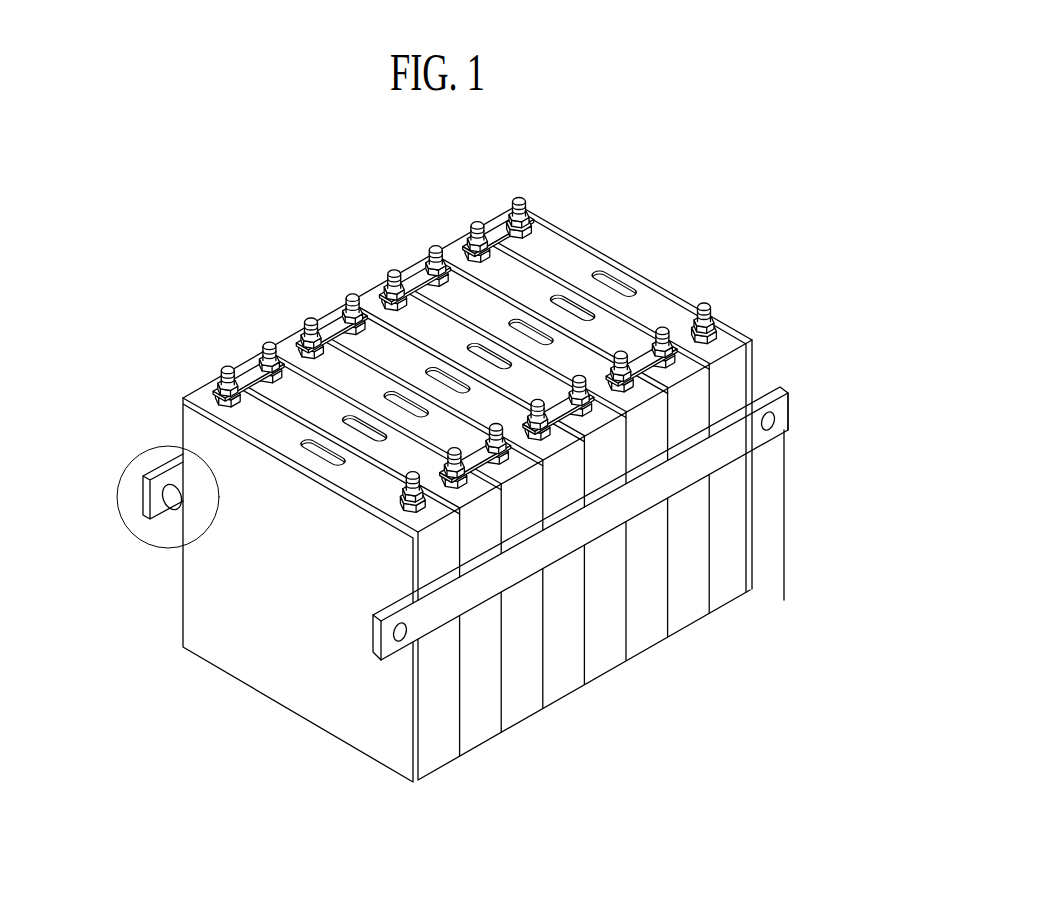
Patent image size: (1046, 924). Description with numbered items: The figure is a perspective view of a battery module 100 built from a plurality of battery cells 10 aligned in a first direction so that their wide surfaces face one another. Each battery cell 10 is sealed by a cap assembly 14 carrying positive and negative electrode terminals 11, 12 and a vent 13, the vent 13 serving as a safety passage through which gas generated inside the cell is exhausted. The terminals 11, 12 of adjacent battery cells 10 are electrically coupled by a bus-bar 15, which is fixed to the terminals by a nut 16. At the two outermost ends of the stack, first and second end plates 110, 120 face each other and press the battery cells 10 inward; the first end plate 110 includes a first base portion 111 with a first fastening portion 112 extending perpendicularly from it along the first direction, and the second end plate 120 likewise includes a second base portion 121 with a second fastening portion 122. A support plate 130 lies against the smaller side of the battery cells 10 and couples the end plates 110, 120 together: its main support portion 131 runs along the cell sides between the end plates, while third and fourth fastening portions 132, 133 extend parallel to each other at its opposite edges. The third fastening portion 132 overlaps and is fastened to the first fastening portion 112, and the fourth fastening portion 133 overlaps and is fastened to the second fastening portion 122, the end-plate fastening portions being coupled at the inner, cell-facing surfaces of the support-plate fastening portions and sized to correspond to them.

The battery module 100 is at (471, 471).
The battery cell 10 is at (686, 558).
The positive electrode terminal 11 is at (519, 197).
The negative electrode terminal 12 is at (703, 302).
The vent 13 is at (605, 284).
The cap assembly 14 is at (665, 308).
The bus-bar 15 is at (255, 376).
The nut 16 is at (305, 334).
The first end plate 110 is at (220, 590).
The first base portion 111 is at (200, 608).
The first fastening portion 112 is at (158, 527).
The second end plate 120 is at (714, 398).
The second base portion 121 is at (745, 330).
The second fastening portion 122 is at (768, 392).
The support plate 130 is at (447, 600).
The main support portion 131 is at (568, 540).
The third fastening portion 132 is at (381, 643).
The fourth fastening portion 133 is at (794, 565).